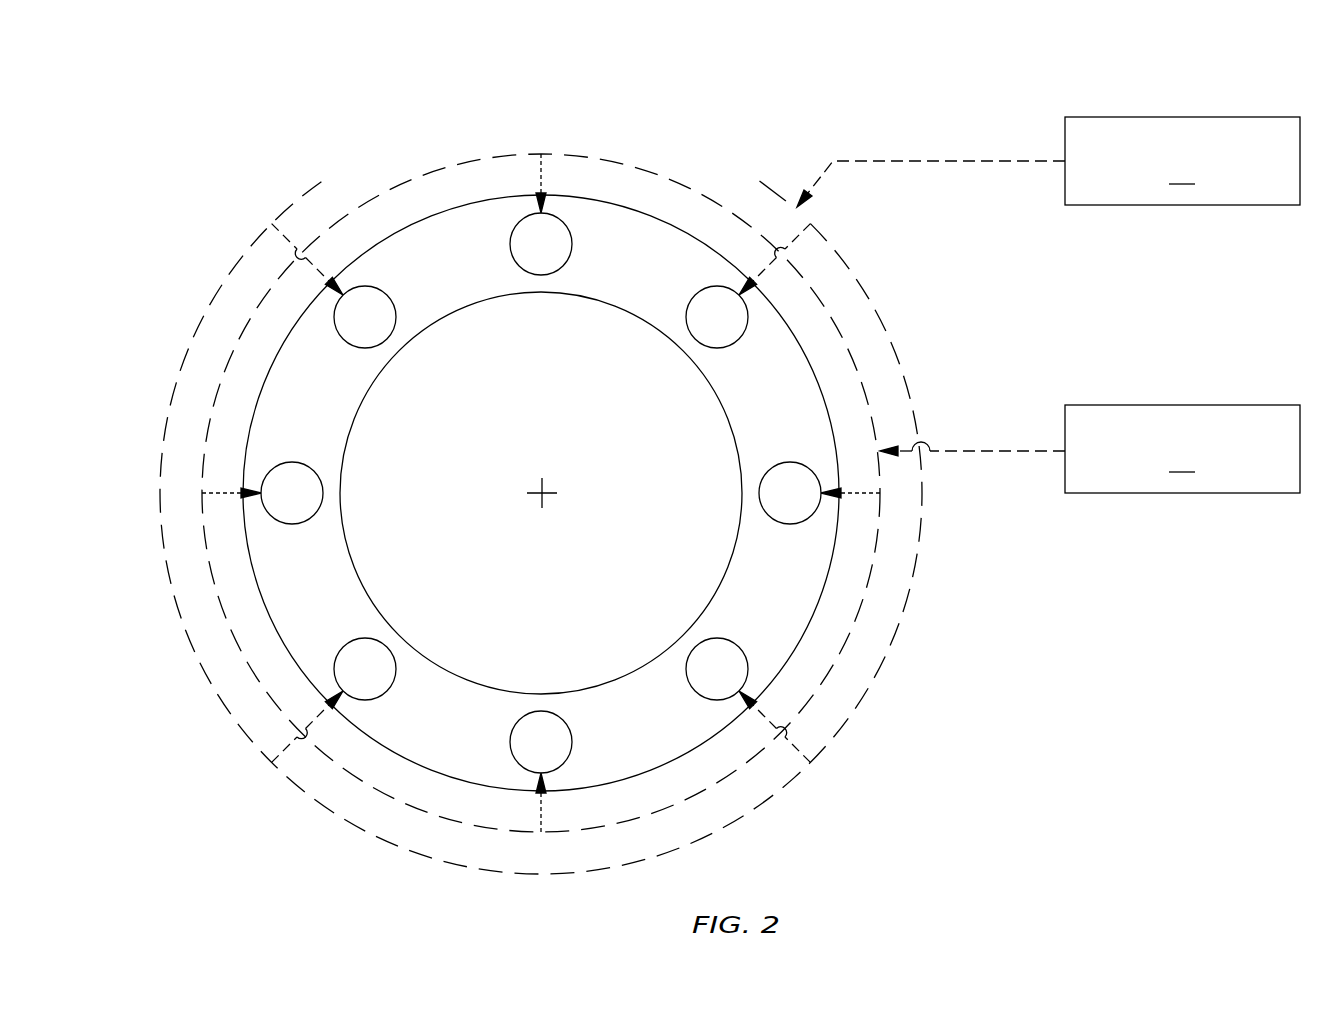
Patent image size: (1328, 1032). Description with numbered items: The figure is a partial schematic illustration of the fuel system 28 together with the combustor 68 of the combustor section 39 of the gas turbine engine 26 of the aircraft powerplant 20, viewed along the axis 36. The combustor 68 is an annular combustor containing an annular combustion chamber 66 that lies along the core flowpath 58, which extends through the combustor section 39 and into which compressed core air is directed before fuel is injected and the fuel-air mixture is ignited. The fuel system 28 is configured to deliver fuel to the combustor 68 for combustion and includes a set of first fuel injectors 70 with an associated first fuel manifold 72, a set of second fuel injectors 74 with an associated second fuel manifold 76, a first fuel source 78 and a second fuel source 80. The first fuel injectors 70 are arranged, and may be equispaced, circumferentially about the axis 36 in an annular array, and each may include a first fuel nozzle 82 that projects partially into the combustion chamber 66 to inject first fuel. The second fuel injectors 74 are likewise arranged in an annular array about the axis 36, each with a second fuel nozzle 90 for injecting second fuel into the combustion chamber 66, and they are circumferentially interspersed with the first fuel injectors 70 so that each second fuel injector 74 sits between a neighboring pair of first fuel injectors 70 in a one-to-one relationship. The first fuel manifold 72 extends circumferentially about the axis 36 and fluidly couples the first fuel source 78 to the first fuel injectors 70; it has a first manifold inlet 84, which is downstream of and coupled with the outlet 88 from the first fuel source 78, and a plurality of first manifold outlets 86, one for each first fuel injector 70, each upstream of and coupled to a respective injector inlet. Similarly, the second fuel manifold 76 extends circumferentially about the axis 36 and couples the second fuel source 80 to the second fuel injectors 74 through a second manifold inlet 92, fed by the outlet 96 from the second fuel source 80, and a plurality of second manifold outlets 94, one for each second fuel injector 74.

The aircraft powerplant 20 is at (470, 466).
The gas turbine engine 26 is at (187, 212).
The fuel system 28 is at (1214, 90).
The axis 36 is at (545, 496).
The combustor section 39 is at (343, 124).
The core flowpath 58 is at (541, 475).
The combustion chamber 66 is at (672, 283).
The combustor 68 is at (680, 205).
The first fuel injectors 70 is at (541, 493).
The first fuel manifold 72 is at (871, 298).
The second fuel injectors 74 is at (541, 493).
The second fuel manifold 76 is at (865, 598).
The first fuel source 78 is at (1182, 161).
The second fuel source 80 is at (1182, 449).
The first fuel nozzle 82 is at (387, 338).
The first manifold inlet 84 is at (802, 210).
The first manifold outlets 86 is at (273, 226).
The first fuel source outlet 88 is at (1065, 161).
The second fuel nozzle 90 is at (542, 275).
The second manifold inlet 92 is at (883, 450).
The second manifold outlets 94 is at (543, 153).
The second fuel source outlet 96 is at (1065, 451).